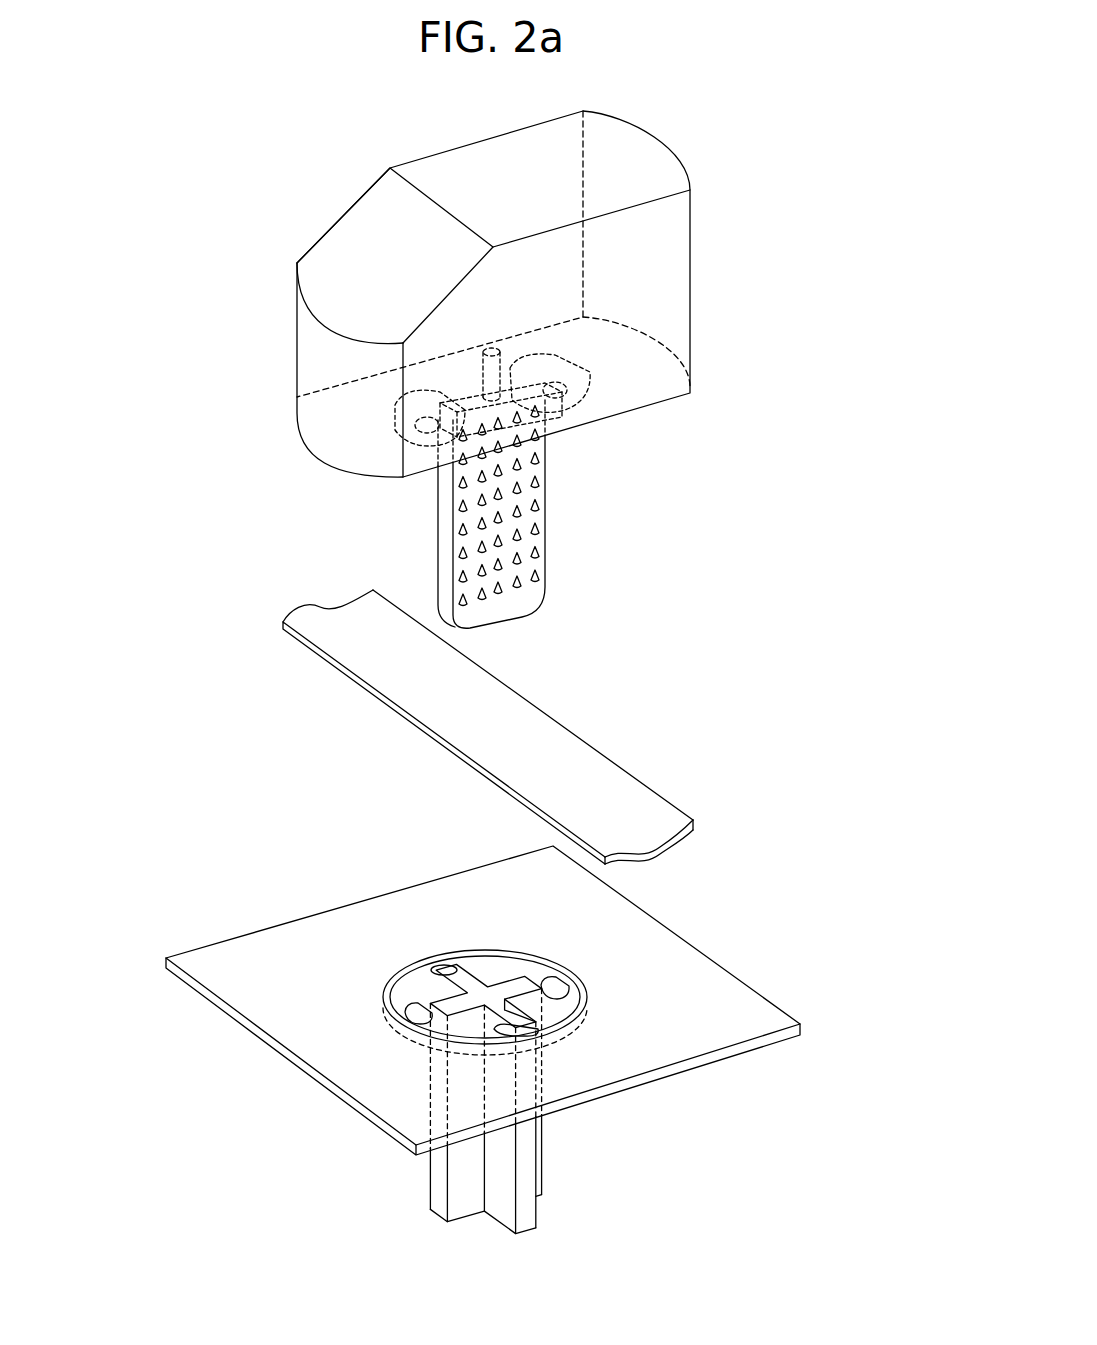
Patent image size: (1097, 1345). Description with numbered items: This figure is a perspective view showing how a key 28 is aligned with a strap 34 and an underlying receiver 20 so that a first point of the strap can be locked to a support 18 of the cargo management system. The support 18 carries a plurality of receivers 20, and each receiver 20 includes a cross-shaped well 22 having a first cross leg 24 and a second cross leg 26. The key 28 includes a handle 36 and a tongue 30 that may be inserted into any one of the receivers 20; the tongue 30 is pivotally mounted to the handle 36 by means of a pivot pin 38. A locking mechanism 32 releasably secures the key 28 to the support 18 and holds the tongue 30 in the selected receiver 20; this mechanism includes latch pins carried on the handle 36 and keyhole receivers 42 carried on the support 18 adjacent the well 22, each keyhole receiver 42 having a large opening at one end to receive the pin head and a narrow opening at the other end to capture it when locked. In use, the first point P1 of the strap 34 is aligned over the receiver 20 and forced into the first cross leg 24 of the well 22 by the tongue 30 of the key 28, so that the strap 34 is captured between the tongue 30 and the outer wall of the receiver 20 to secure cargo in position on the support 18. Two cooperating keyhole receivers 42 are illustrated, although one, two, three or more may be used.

The support 18 is at (620, 1067).
The receiver 20 is at (508, 1001).
The cross-shaped well 22 is at (467, 1051).
The first cross leg 24 is at (528, 984).
The second cross leg 26 is at (450, 965).
The key 28 is at (718, 138).
The tongue 30 is at (545, 505).
The locking mechanism 32 is at (382, 431).
The strap 34 is at (526, 727).
The handle 36 is at (427, 152).
The pivot pin 38 is at (480, 358).
The keyhole receiver 42 is at (560, 988).
The first point of the strap P1 is at (507, 717).